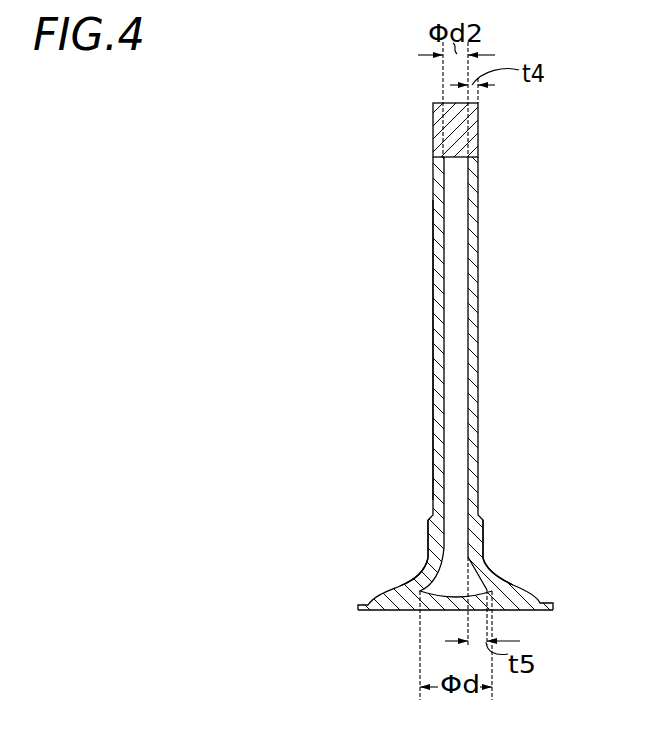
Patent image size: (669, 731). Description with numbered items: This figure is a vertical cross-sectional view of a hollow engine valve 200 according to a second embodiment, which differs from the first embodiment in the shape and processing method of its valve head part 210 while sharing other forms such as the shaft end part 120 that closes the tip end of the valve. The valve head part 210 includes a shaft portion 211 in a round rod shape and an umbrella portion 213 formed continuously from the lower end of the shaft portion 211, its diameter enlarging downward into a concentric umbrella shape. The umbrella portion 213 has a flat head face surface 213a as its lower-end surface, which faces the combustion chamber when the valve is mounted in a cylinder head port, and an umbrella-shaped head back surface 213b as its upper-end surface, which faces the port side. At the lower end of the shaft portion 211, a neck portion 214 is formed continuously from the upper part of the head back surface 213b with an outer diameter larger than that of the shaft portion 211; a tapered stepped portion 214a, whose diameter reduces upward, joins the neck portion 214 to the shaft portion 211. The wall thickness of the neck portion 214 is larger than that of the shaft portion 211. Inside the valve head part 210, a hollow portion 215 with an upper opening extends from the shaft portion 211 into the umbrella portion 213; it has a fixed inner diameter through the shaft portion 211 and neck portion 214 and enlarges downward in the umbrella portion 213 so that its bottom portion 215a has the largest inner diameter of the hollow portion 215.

The hollow engine valve 200 is at (504, 183).
The shaft end part 120 is at (478, 130).
The valve head part 210 is at (480, 255).
The shaft portion 211 is at (432, 313).
The umbrella portion 213 is at (518, 587).
The head face surface 213a is at (515, 610).
The head back surface 213b is at (390, 584).
The neck portion 214 is at (427, 533).
The stepped portion 214a is at (485, 512).
The hollow portion 215 is at (443, 193).
The bottom portion 215a is at (432, 593).